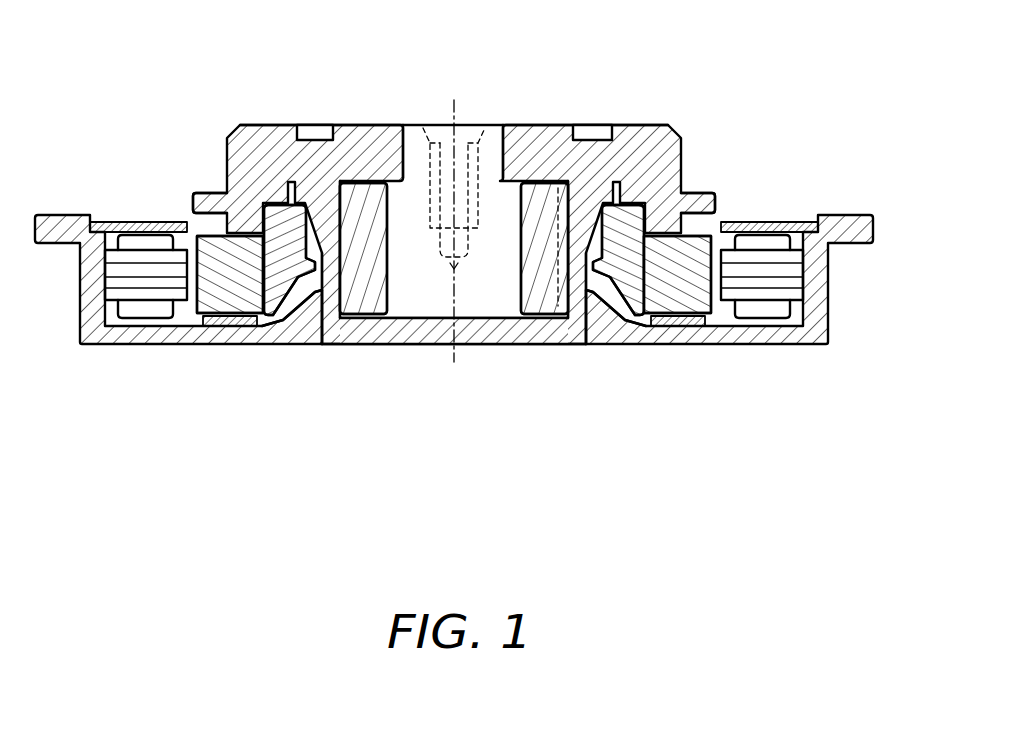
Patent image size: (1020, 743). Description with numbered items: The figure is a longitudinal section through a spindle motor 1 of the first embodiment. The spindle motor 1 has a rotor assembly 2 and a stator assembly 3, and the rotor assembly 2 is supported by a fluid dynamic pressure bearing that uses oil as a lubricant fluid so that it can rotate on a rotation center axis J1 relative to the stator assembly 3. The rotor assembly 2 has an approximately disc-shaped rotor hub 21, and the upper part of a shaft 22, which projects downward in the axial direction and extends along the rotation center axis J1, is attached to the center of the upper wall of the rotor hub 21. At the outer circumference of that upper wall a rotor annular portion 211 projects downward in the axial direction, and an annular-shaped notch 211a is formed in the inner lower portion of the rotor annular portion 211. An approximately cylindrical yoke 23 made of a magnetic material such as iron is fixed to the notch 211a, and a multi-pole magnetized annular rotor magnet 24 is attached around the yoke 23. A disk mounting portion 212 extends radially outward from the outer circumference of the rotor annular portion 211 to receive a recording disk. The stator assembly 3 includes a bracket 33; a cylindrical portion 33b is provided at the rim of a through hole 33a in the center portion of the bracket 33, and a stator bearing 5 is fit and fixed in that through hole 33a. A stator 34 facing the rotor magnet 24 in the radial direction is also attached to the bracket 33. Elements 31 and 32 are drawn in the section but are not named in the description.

The spindle motor 1 is at (110, 53).
The rotor assembly 2 is at (508, 60).
The rotor hub 21 is at (557, 133).
The shaft 22 is at (492, 137).
The rotor annular portion 211 is at (682, 143).
The notch 211a is at (628, 226).
The disk mounting portion 212 is at (700, 195).
The yoke 23 is at (583, 322).
The rotor magnet 24 is at (688, 278).
The stator assembly 3 is at (367, 424).
The first bushing 31 is at (355, 302).
The second bushing 32 is at (578, 268).
The bracket 33 is at (218, 325).
The through hole 33a is at (320, 322).
The cylindrical portion 33b is at (600, 345).
The stator 34 is at (147, 277).
The stator bearing 5 is at (413, 352).
The rotation center axis J1 is at (453, 110).